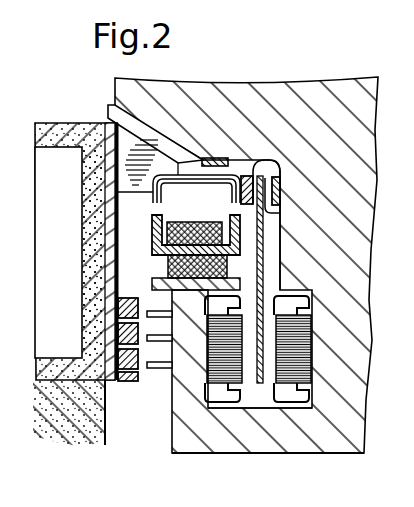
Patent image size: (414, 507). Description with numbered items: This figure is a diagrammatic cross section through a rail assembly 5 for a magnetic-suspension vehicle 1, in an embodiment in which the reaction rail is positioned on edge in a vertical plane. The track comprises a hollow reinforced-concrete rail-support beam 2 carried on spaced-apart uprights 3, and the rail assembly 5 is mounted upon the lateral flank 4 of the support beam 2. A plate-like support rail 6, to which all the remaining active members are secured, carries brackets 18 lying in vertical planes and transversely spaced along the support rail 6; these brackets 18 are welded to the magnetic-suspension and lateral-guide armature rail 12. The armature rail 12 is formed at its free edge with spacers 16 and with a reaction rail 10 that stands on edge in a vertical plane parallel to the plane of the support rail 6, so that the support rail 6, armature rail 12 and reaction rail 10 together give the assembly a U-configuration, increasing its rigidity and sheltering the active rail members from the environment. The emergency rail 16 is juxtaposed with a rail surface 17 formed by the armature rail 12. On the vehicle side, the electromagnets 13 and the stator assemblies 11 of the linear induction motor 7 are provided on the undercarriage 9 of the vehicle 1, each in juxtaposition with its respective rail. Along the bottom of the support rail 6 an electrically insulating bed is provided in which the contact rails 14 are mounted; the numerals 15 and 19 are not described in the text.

The magnetic-suspension vehicle 1 is at (256, 92).
The rail-support beam 2 is at (76, 231).
The upright or pylon structure 3 is at (65, 412).
The lateral flank 4 is at (107, 197).
The rail assembly 5 is at (98, 312).
The support rail 6 is at (98, 255).
The linear induction motor 7 is at (224, 412).
The undercarriage 9 is at (325, 456).
The reaction rail 10 is at (265, 249).
The stator assemblies 11 is at (207, 320).
The magnetic-suspension and lateral-guide armature rail 12 is at (182, 174).
The electromagnets 13 is at (152, 244).
The contact rails 14 is at (142, 373).
The ribs 15 is at (158, 369).
The spacers / emergency rail 16 is at (213, 159).
The rail surface 17 is at (222, 171).
The brackets 18 is at (128, 128).
The channel 19 is at (258, 170).